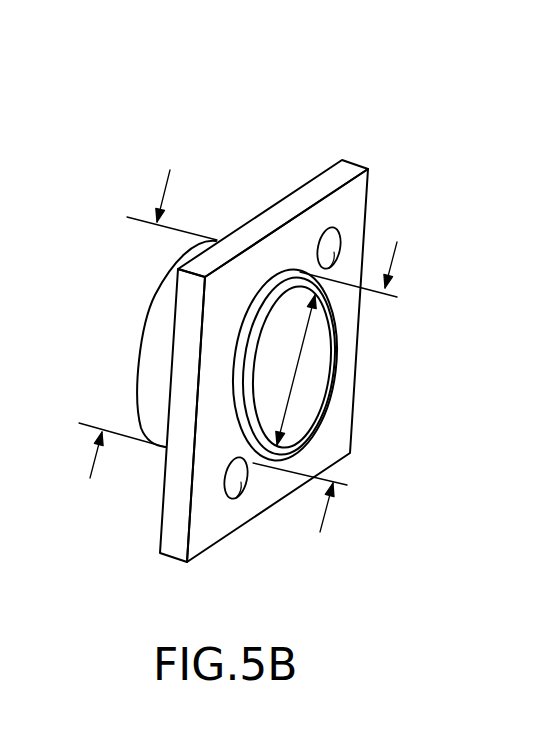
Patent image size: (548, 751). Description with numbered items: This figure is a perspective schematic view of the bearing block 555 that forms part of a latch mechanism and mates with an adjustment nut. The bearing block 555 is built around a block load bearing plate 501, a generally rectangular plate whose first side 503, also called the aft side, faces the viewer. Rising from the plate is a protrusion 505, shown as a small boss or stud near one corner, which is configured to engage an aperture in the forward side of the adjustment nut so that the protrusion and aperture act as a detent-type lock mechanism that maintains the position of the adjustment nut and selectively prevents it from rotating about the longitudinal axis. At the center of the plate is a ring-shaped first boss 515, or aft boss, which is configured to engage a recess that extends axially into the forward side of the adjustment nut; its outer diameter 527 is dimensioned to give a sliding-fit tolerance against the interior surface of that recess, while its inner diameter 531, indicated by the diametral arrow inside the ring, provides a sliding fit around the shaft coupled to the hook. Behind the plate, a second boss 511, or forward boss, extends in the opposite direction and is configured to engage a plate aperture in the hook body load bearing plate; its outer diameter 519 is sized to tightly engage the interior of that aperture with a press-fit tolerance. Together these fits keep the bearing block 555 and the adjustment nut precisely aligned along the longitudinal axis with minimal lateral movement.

The bearing block 555 is at (140, 117).
The block load bearing plate 501 is at (280, 211).
The first side 503 is at (203, 533).
The protrusion 505 is at (333, 240).
The second boss 511 is at (143, 334).
The first boss 515 is at (325, 406).
The outer diameter 519 is at (90, 478).
The outer diameter 527 is at (397, 249).
The inner diameter 531 is at (300, 355).